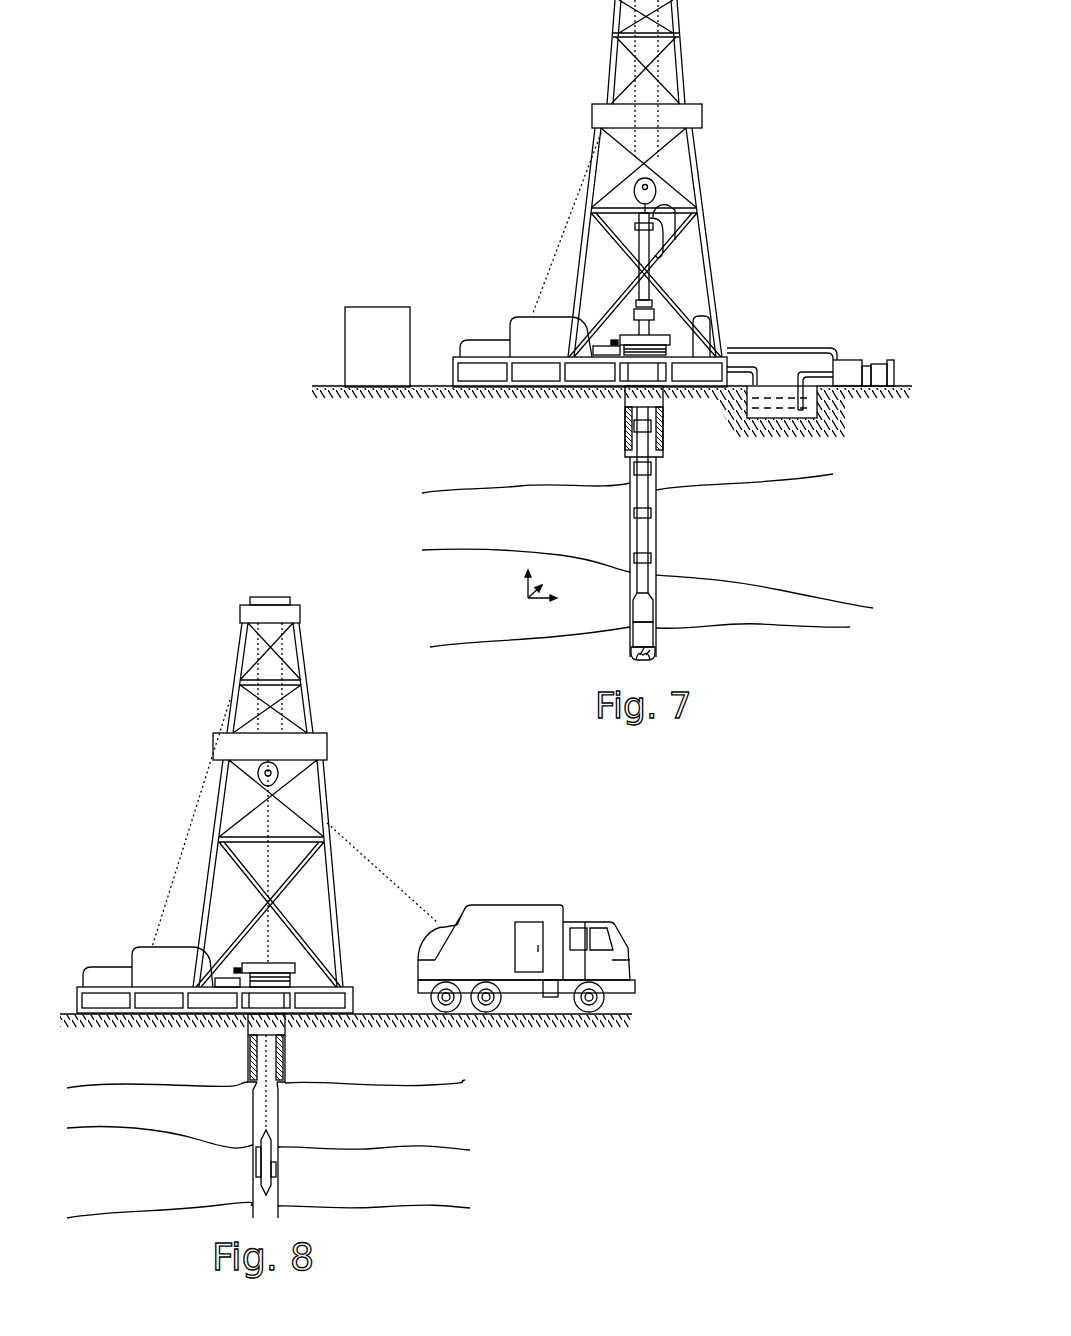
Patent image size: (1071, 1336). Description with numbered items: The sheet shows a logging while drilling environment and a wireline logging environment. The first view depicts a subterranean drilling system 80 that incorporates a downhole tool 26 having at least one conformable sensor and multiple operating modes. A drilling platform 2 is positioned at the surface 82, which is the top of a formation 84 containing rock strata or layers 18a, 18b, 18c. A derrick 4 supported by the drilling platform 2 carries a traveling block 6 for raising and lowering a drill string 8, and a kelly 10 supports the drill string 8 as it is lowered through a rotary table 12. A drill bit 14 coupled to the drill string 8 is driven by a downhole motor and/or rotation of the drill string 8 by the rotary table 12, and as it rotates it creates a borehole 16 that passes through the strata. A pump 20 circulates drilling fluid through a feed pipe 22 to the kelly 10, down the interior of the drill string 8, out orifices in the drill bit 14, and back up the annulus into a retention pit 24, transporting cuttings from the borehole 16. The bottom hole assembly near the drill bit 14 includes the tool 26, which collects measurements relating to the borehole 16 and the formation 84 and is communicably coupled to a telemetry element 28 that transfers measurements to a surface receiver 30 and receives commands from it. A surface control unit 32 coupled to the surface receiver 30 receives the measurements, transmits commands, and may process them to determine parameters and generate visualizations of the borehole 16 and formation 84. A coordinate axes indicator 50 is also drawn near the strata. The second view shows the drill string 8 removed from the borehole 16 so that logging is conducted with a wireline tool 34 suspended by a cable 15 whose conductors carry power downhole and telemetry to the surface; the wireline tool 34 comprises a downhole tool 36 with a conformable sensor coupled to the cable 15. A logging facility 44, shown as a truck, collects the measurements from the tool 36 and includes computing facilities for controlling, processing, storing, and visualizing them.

In FIG. 7, the drilling platform 2 is at (455, 368).
In FIG. 8, the drilling platform 2 is at (353, 1003).
In FIG. 7, the derrick 4 is at (689, 76).
In FIG. 8, the derrick 4 is at (336, 893).
In FIG. 7, the traveling block 6 is at (652, 185).
In FIG. 8, the traveling block 6 is at (279, 768).
In FIG. 7, the drill string 8 is at (646, 480).
In FIG. 7, the kelly 10 is at (645, 240).
In FIG. 7, the rotary table 12 is at (660, 332).
In FIG. 8, the rotary table 12 is at (280, 965).
In FIG. 7, the drill bit 14 is at (655, 658).
In FIG. 8, the cable 15 is at (263, 1060).
In FIG. 7, the borehole 16 is at (658, 500).
In FIG. 8, the borehole 16 is at (272, 1105).
In FIG. 7, the rock strata or layer 18a is at (424, 593).
In FIG. 8, the rock strata or layer 18a is at (417, 1068).
In FIG. 7, the rock strata or layer 18b is at (627, 502).
In FIG. 8, the rock strata or layer 18b is at (101, 1118).
In FIG. 7, the rock strata or layer 18c is at (779, 473).
In FIG. 8, the rock strata or layer 18c is at (101, 1201).
In FIG. 7, the pump 20 is at (848, 360).
In FIG. 7, the feed pipe 22 is at (780, 348).
In FIG. 7, the retention pit 24 is at (790, 405).
In FIG. 7, the downhole tool 26 is at (643, 623).
In FIG. 7, the telemetry element 28 is at (645, 606).
In FIG. 7, the surface receiver 30 is at (651, 300).
In FIG. 7, the surface control unit 32 is at (365, 355).
In FIG. 8, the wireline tool 34 is at (262, 1145).
In FIG. 8, the downhole tool 36 is at (257, 1160).
In FIG. 8, the logging facility 44 is at (500, 905).
In FIG. 7, the coordinate system 50 is at (518, 590).
In FIG. 7, the subterranean drilling system 80 is at (786, 127).
In FIG. 7, the surface 82 is at (327, 386).
In FIG. 8, the surface 82 is at (67, 1014).
In FIG. 7, the formation 84 is at (345, 461).
In FIG. 8, the formation 84 is at (567, 1098).